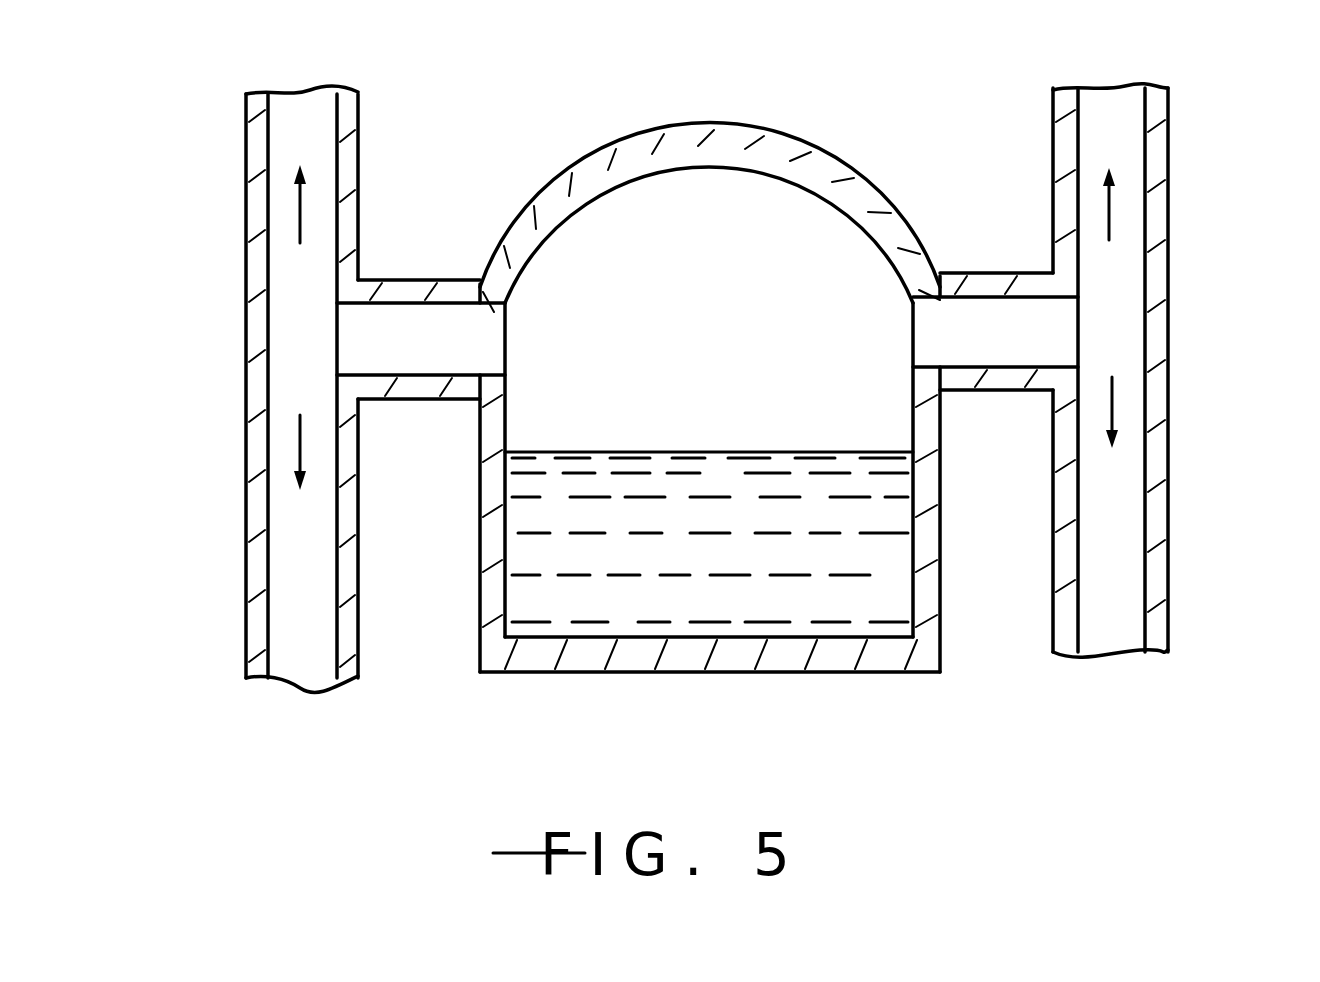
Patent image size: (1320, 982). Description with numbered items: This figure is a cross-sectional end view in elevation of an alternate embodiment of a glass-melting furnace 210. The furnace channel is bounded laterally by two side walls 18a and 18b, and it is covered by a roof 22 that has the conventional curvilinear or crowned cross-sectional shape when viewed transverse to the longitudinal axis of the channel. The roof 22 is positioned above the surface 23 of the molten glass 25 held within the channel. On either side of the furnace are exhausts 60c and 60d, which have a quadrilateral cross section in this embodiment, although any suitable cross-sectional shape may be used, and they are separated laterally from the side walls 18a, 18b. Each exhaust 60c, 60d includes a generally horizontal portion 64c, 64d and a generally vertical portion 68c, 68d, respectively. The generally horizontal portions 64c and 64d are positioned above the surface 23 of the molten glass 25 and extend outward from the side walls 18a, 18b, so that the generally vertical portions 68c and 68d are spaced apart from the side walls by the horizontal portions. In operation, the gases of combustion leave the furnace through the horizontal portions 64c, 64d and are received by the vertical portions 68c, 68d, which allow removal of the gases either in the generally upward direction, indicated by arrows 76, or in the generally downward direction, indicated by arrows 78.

The glass-melting furnace 210 is at (701, 371).
The roof 22 is at (654, 135).
The surface of molten glass 23 is at (562, 450).
The molten glass 25 is at (718, 569).
The side wall 18a is at (940, 585).
The side wall 18b is at (480, 597).
The generally horizontal portion 64d is at (403, 280).
The generally horizontal portion 64c is at (985, 273).
The exhaust 60d is at (230, 389).
The exhaust 60c is at (1167, 370).
The generally vertical portion 68d is at (245, 135).
The generally vertical portion 68c is at (1165, 140).
The arrows 76 is at (302, 218).
The arrows 78 is at (300, 432).